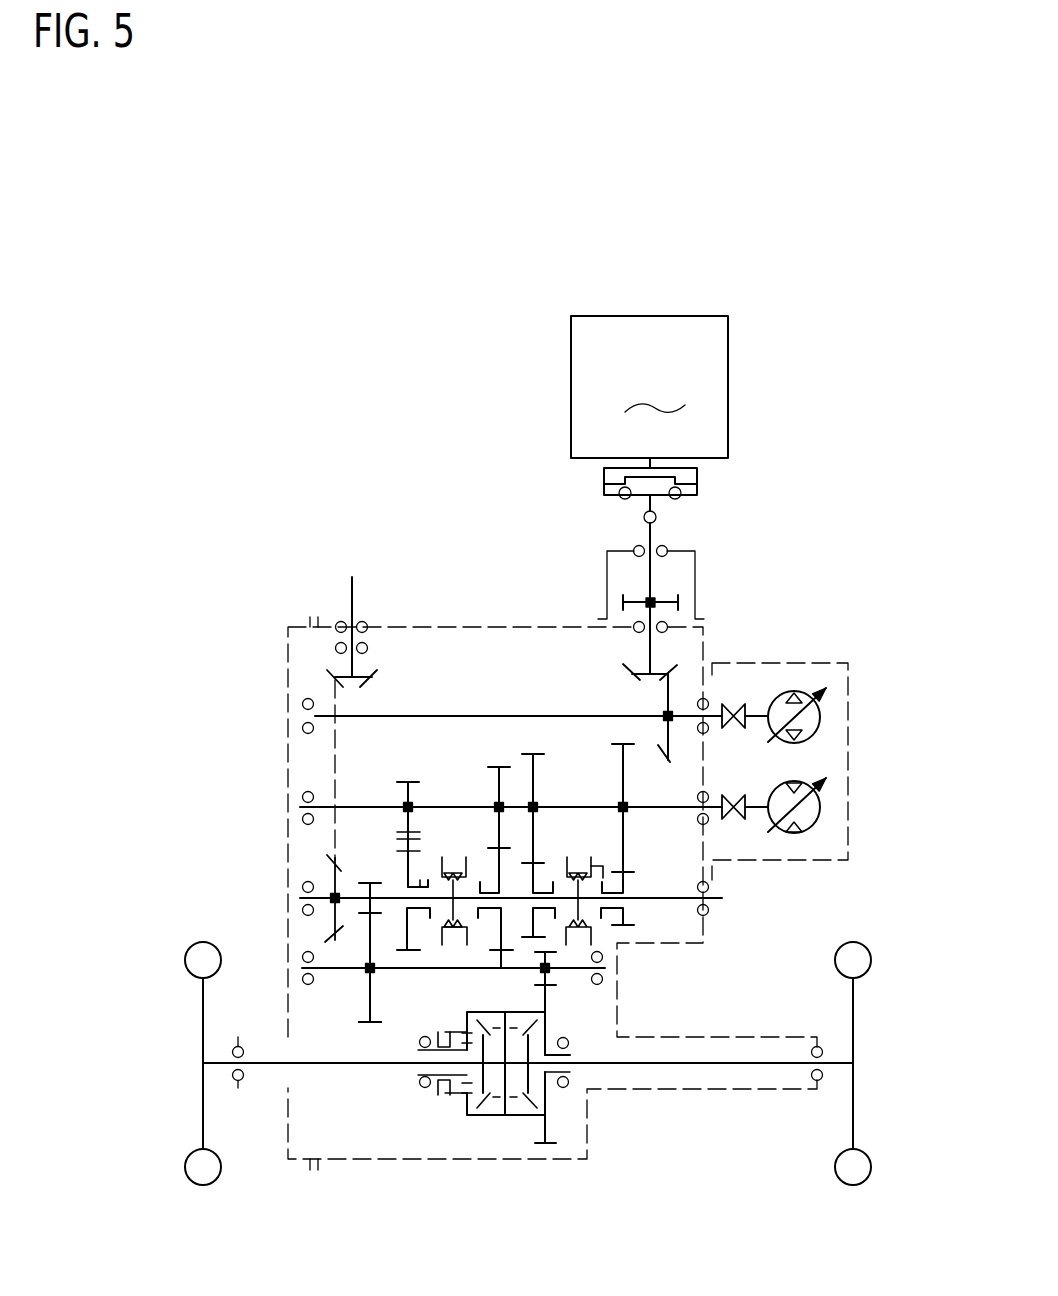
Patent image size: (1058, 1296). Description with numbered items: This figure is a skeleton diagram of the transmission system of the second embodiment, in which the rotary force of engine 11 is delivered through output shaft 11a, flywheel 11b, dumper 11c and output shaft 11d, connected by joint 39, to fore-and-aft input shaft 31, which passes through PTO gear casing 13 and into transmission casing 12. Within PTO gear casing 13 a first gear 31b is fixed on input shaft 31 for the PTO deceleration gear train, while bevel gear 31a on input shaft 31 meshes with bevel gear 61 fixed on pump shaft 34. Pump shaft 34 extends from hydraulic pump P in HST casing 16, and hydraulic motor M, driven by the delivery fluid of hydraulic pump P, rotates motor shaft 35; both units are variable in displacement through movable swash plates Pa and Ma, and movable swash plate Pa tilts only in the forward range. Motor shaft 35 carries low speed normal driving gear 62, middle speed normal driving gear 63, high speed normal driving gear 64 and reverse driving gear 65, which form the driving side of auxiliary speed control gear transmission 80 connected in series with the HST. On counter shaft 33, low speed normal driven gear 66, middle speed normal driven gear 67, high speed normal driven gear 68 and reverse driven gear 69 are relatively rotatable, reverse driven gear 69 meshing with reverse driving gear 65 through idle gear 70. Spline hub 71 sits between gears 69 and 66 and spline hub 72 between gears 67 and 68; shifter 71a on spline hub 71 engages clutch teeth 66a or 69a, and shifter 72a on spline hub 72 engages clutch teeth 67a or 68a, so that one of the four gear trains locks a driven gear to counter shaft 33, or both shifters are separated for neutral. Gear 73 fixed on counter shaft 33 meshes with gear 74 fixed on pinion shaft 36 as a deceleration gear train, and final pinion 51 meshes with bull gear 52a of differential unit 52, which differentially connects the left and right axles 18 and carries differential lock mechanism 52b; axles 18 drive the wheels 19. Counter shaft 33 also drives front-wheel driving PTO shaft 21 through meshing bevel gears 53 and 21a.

The engine 11 is at (649, 387).
The output shaft 11a is at (652, 463).
The flywheel 11b is at (697, 490).
The dumper 11c is at (662, 497).
The output shaft 11d is at (644, 507).
The joint 39 is at (657, 518).
The input shaft 31 is at (648, 537).
The PTO gear casing 13 is at (606, 578).
The first gear 31b is at (660, 598).
The bevel gear 31a is at (628, 668).
The bevel gear 61 is at (671, 687).
The front-wheel driving PTO shaft 21 is at (352, 593).
The bevel gear 21a is at (330, 672).
The transmission casing 12 is at (288, 660).
The pump shaft 34 is at (428, 716).
The hydraulic pump P is at (822, 725).
The movable swash plate Pa is at (828, 692).
The motor shaft 35 is at (305, 809).
The hydraulic motor M is at (822, 820).
The movable swash plate Ma is at (830, 783).
The HST casing 16 is at (815, 865).
The reverse driving gear 65 is at (408, 782).
The idle gear 70 is at (405, 840).
The low speed normal driving gear 62 is at (499, 767).
The middle speed normal driving gear 63 is at (536, 754).
The high speed normal driving gear 64 is at (623, 760).
The clutch teeth 66a is at (480, 878).
The clutch teeth 67a is at (548, 877).
The shifter 72a is at (591, 866).
The clutch teeth 69a is at (430, 883).
The bevel gear 53 is at (335, 880).
The counter shaft 33 is at (728, 898).
The gear 73 is at (365, 905).
The reverse driven gear 69 is at (407, 955).
The low speed normal driven gear 66 is at (497, 957).
The middle speed normal driven gear 67 is at (588, 930).
The high speed normal driven gear 68 is at (625, 927).
The clutch teeth 68a is at (605, 915).
The spline hub 72 is at (628, 906).
The auxiliary speed control gear transmission 80 is at (666, 938).
The shifter 71a is at (446, 928).
The spline hub 71 is at (463, 928).
The pinion shaft 36 is at (330, 975).
The gear 74 is at (365, 1000).
The final pinion 51 is at (547, 978).
The axles 18 is at (340, 1065).
The wheel 19 is at (205, 1185).
The differential unit 52 is at (492, 1147).
The differential lock mechanism 52b is at (441, 1113).
The bull gear 52a is at (547, 1150).